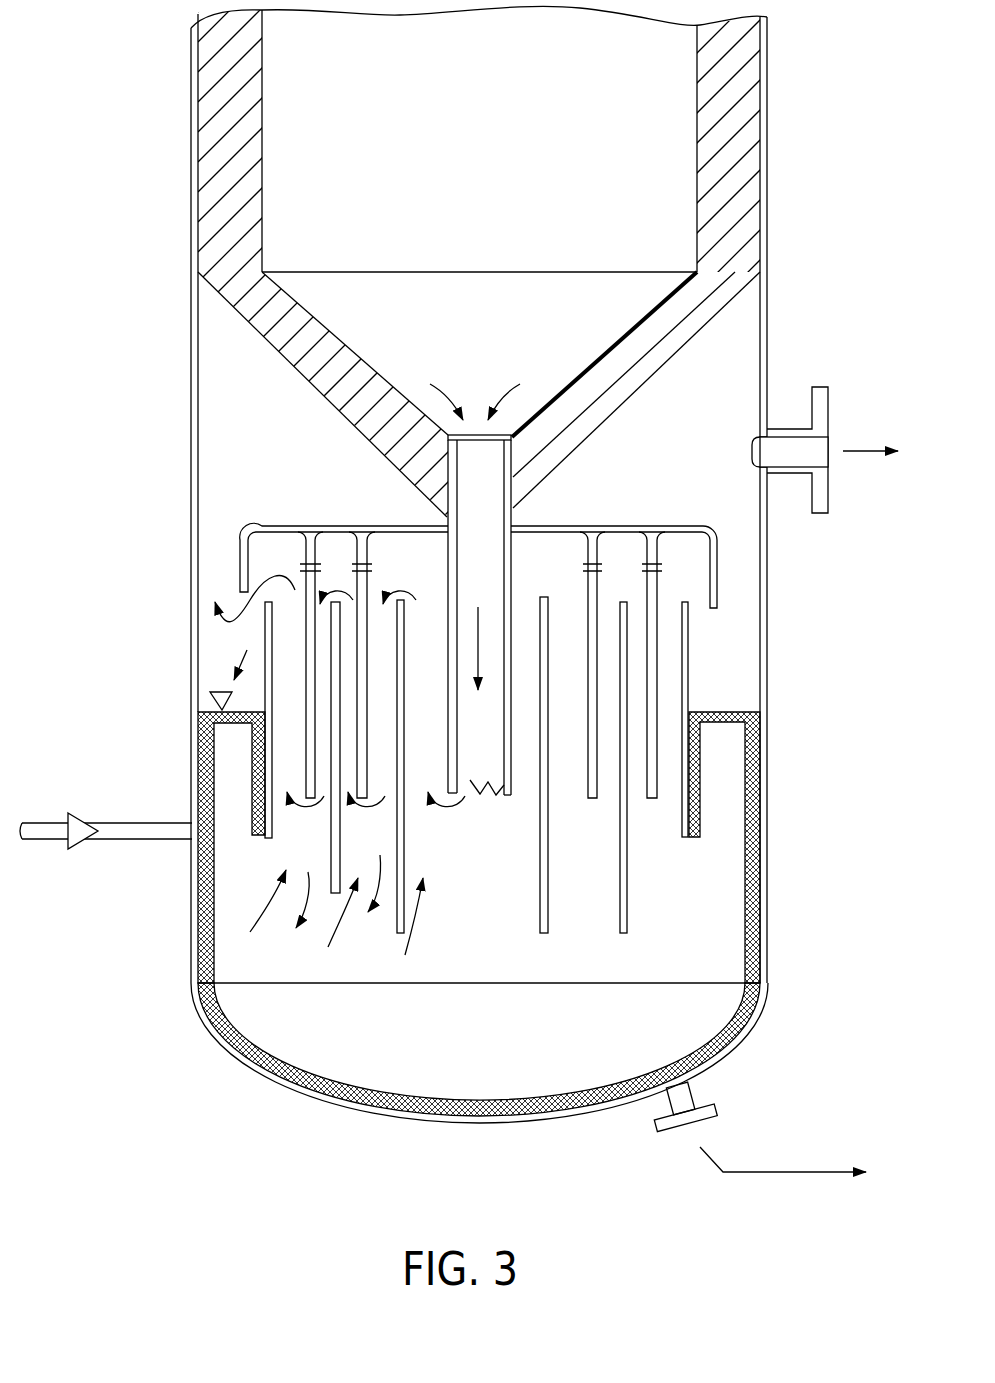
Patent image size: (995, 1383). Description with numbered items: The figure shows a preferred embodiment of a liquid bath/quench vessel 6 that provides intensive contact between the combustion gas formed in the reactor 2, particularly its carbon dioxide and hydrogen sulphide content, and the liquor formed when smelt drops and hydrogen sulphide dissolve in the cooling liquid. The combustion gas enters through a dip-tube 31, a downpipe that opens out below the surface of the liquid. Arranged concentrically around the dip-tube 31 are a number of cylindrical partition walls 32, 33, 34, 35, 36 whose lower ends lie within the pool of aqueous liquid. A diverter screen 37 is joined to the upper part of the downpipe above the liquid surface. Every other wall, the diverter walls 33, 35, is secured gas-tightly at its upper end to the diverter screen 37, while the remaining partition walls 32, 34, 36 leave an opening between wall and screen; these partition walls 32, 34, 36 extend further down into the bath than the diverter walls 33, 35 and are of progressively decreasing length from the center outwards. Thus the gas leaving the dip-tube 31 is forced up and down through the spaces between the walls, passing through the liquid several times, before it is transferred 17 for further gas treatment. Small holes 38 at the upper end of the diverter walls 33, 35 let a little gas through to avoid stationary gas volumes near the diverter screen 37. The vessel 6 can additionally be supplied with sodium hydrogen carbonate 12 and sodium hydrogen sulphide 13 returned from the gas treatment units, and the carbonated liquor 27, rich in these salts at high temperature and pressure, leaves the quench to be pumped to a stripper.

The reactor 2 is at (740, 182).
The quench vessel 6 is at (725, 926).
The NaHCO3 supply 12 is at (69, 866).
The NaHS supply 13 is at (122, 841).
The gas transfer 17 is at (833, 440).
The liquor 27 is at (760, 1172).
The dip-tube 31 is at (512, 517).
The partition wall 32 is at (548, 648).
The diverter wall 33 is at (597, 672).
The partition wall 34 is at (628, 720).
The diverter wall 35 is at (658, 760).
The partition wall 36 is at (693, 803).
The diverter screen 37 is at (245, 525).
The small holes 38 is at (713, 624).